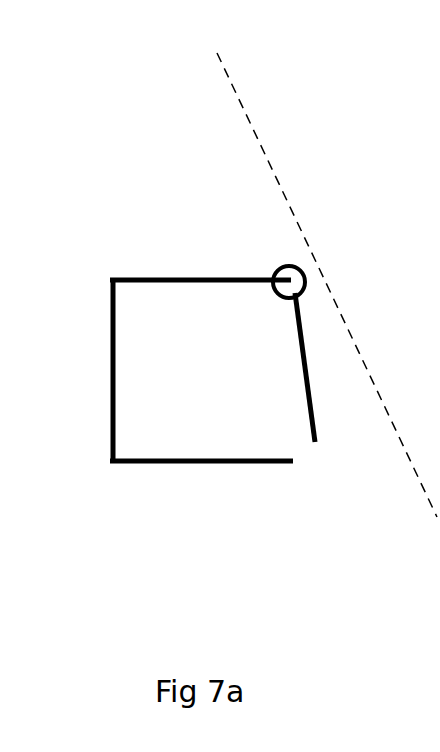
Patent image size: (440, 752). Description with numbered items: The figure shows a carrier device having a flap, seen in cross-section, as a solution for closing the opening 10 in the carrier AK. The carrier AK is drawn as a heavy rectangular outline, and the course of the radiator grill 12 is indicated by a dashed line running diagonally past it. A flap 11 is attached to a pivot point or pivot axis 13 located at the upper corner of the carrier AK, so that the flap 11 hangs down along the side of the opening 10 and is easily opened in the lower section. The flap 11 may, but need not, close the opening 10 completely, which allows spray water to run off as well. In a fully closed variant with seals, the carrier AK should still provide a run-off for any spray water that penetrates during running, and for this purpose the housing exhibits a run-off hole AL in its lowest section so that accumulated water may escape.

The opening 10 is at (288, 402).
The flap 11 is at (312, 367).
The radiator grill 12 is at (439, 95).
The pivot point or pivot axis 13 is at (288, 265).
The carrier AK is at (110, 340).
The run-off hole AL is at (233, 465).